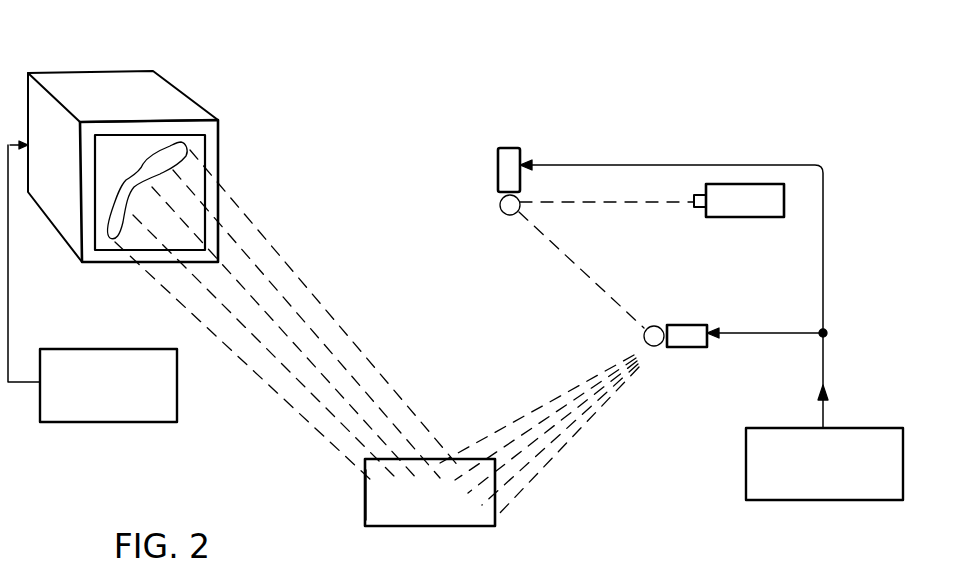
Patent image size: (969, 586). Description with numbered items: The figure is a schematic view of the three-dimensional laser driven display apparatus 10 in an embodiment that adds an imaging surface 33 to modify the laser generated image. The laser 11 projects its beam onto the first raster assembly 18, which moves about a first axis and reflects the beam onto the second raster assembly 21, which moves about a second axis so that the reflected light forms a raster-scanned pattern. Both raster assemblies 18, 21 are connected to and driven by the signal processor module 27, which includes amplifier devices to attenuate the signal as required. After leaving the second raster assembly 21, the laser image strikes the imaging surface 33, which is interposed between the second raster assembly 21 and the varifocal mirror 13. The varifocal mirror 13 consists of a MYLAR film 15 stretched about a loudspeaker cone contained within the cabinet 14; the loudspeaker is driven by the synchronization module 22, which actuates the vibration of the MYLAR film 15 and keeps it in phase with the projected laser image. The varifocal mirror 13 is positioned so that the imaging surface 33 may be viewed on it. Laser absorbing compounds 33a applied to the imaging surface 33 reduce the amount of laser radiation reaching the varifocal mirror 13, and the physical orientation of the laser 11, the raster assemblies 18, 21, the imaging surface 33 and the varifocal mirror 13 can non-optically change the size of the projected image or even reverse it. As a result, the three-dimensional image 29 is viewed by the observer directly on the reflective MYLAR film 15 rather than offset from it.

The three-dimensional laser driven display apparatus 10 is at (398, 137).
The laser 11 is at (763, 219).
The varifocal mirror 13 is at (204, 86).
The cabinet 14 is at (99, 83).
The MYLAR film 15 is at (200, 144).
The first raster assembly 18 is at (497, 180).
The second raster assembly 21 is at (689, 348).
The synchronization module 22 is at (96, 400).
The signal processor module 27 is at (857, 427).
The three-dimensional image 29 is at (113, 207).
The imaging surface 33 is at (442, 530).
The laser absorbing compounds 33a is at (380, 513).